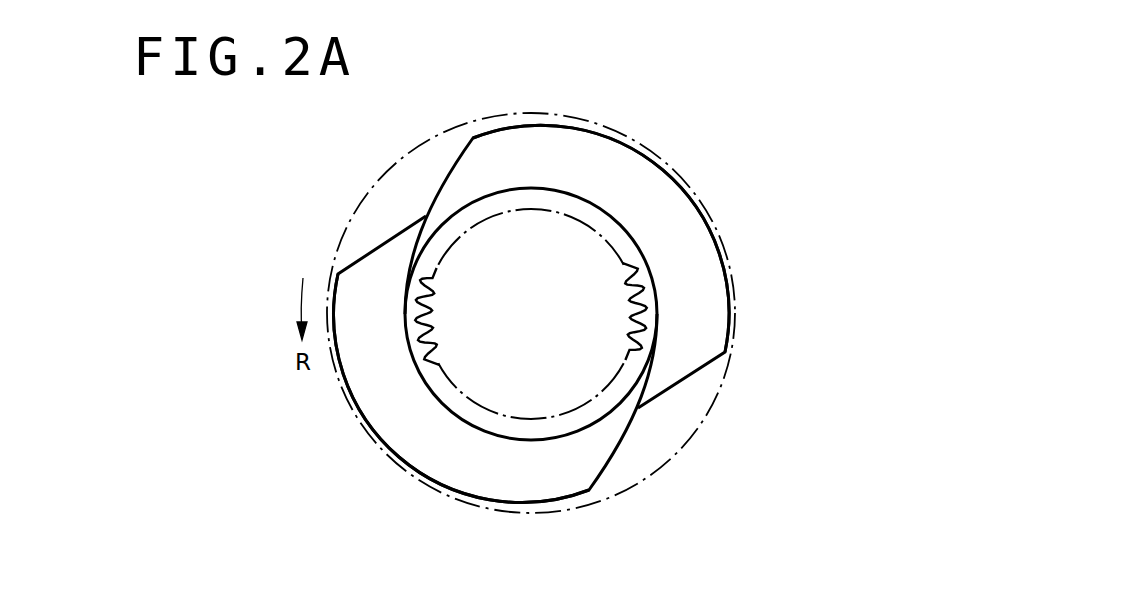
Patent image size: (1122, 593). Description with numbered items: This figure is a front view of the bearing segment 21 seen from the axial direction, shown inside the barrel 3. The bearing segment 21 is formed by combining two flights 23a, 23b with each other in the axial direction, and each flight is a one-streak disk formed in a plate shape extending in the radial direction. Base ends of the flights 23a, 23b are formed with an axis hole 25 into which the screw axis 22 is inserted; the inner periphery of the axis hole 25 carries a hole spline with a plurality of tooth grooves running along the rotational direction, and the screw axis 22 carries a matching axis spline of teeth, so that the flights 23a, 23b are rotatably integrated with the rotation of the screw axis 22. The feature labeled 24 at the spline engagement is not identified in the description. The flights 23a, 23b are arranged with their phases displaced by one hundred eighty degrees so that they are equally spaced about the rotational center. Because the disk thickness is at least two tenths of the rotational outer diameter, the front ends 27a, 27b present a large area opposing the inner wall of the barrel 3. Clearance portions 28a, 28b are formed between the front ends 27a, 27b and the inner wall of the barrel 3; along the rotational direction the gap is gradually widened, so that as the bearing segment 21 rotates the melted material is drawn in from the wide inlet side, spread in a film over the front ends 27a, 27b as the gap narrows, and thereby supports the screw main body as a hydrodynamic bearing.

The barrel 3 is at (683, 441).
The bearing segment 21 is at (550, 309).
The screw axis 22 is at (597, 227).
The flight 23a is at (588, 217).
The flight 23b is at (453, 404).
The spline teeth 24 is at (643, 325).
The axis hole 25 is at (546, 219).
The front end 27a is at (548, 124).
The front end 27b is at (498, 502).
The clearance portion 28a is at (507, 124).
The clearance portion 28b is at (550, 503).